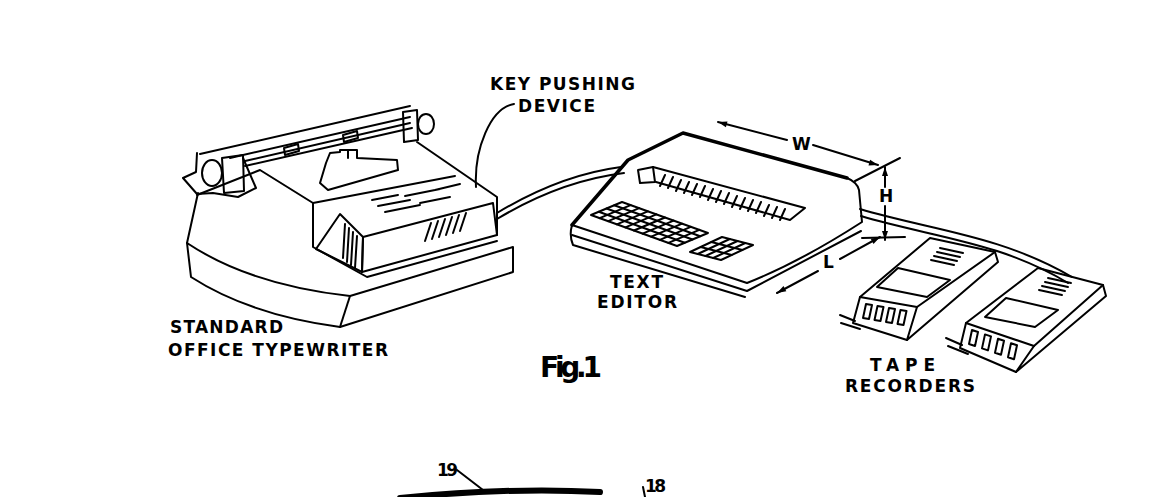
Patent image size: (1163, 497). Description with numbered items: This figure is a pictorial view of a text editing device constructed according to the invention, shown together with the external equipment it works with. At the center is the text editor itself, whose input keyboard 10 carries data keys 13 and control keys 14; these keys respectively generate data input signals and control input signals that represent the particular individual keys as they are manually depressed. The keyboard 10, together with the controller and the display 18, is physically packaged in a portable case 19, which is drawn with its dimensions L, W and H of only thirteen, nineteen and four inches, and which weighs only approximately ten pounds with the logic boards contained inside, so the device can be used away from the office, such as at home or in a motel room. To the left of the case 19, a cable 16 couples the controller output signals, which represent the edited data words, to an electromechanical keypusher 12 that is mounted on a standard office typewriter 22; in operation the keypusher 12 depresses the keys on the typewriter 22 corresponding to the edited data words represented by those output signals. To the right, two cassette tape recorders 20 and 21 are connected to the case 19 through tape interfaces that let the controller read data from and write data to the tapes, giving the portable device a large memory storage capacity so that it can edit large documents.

The input keyboard 10 is at (679, 217).
The electromechanical keypusher 12 is at (405, 250).
The data keys 13 is at (575, 231).
The control keys 14 is at (697, 253).
The cable 16 is at (558, 183).
The display 18 is at (672, 173).
The portable case 19 is at (627, 186).
The cassette tape recorder 20 is at (842, 318).
The cassette tape recorder 21 is at (1067, 328).
The office typewriter 22 is at (348, 209).